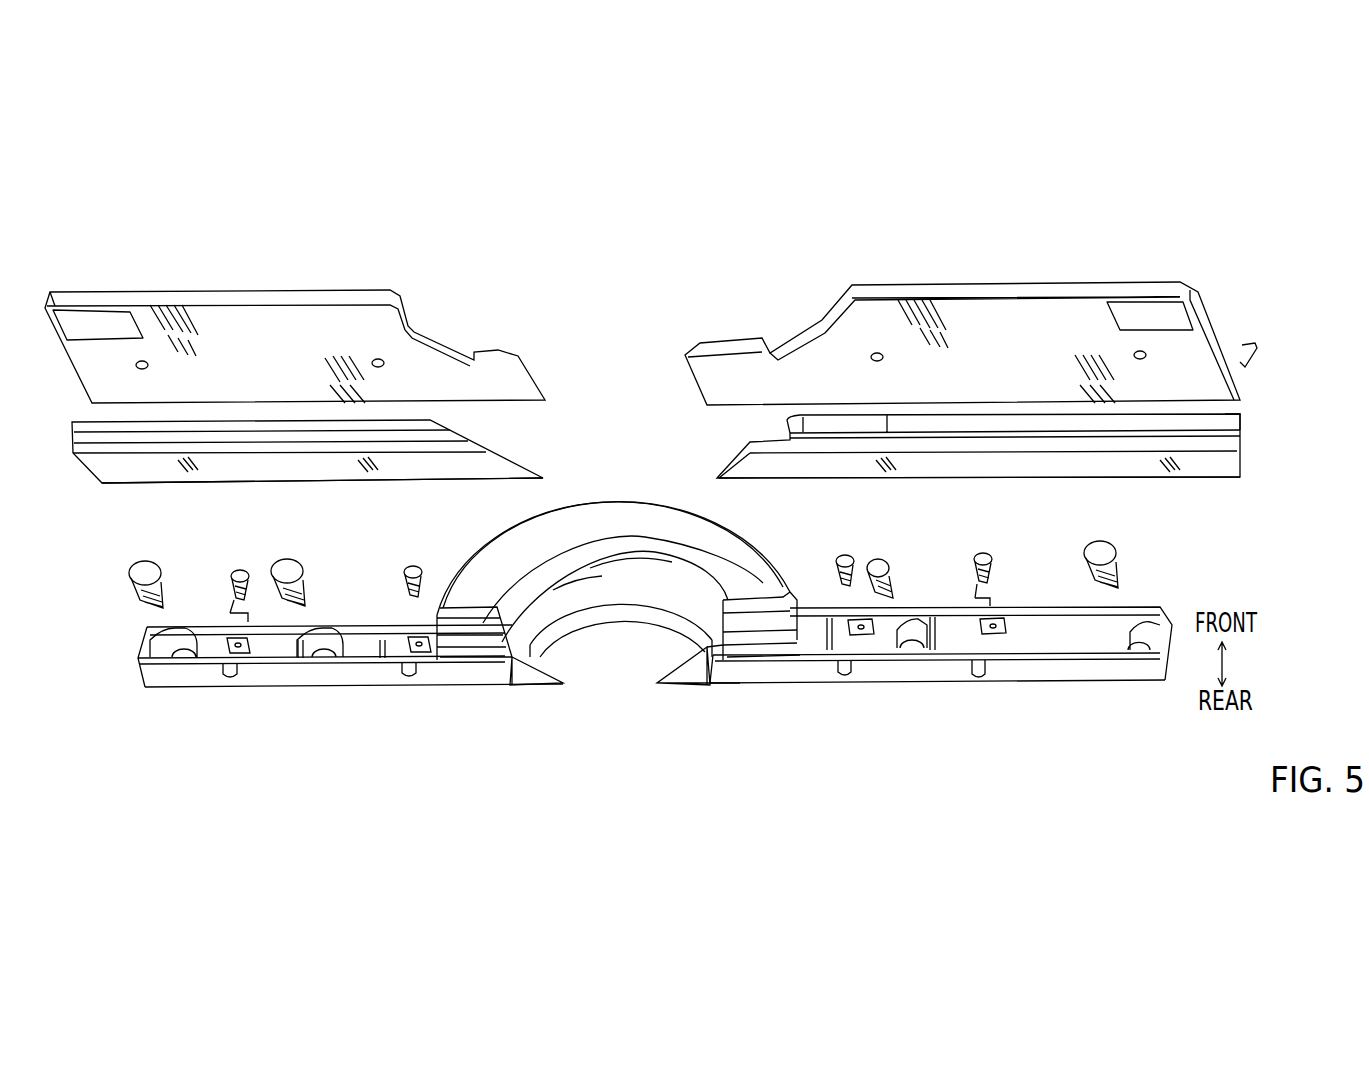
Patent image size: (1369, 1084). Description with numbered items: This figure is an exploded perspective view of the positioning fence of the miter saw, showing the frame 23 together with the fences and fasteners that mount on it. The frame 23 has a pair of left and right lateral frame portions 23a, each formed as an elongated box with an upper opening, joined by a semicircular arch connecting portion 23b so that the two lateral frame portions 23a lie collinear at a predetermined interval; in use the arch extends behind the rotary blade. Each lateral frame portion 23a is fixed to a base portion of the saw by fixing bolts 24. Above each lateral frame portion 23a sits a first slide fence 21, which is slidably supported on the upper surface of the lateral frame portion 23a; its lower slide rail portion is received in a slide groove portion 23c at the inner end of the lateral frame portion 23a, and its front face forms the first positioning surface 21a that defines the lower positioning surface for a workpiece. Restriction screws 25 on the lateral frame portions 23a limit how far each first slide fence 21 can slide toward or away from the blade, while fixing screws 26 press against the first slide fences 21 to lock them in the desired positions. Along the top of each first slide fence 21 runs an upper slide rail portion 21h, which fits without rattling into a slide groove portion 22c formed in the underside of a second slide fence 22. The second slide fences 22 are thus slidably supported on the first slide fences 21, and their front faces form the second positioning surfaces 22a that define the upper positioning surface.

The first slide fence 21 is at (218, 499).
The first positioning surface 21a is at (118, 470).
The upper slide rail portion 21h is at (1228, 418).
The second slide fence 22 is at (269, 276).
The second positioning surface 22a is at (263, 335).
The slide groove portion 22c is at (1250, 376).
The frame 23 is at (914, 698).
The lateral frame portion 23a is at (332, 678).
The semicircular arch connecting portion 23b is at (645, 520).
The slide groove portion 23c is at (513, 663).
The fixing bolt 24 is at (150, 568).
The restriction screw 25 is at (416, 574).
The fixing screw 26 is at (242, 572).